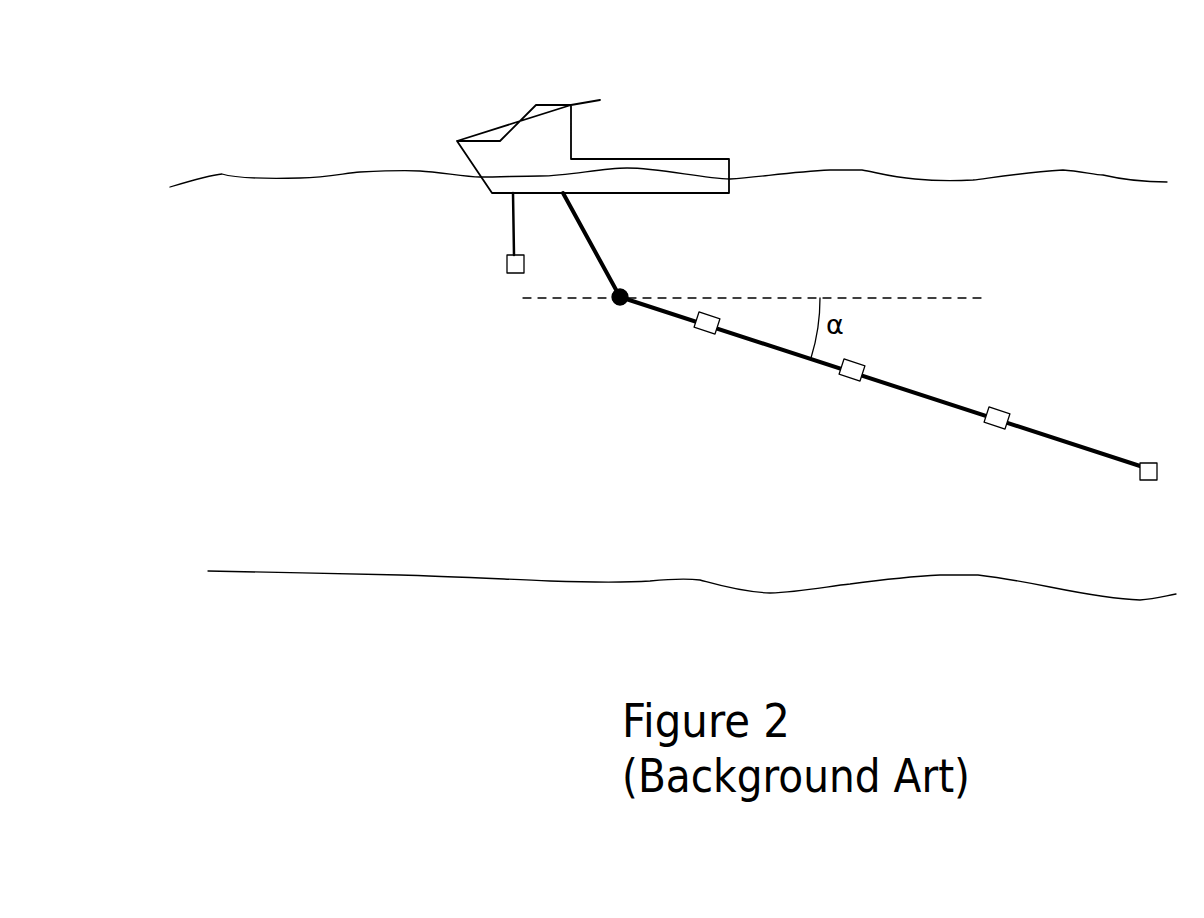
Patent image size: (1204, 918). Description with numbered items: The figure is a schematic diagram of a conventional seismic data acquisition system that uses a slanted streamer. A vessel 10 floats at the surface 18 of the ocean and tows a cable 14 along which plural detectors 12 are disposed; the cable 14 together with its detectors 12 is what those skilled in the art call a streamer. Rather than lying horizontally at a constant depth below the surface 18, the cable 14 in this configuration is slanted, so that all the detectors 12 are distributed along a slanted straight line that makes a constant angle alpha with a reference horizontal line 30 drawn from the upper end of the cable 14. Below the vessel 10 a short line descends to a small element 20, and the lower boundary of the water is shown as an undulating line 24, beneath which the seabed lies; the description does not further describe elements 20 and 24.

The vessel 10 is at (517, 136).
The detectors 12 is at (700, 333).
The cable 14 is at (768, 340).
The surface of the ocean 18 is at (862, 170).
The transducer/sensor 20 is at (505, 260).
The seabed 24 is at (978, 575).
The reference horizontal line 30 is at (927, 298).